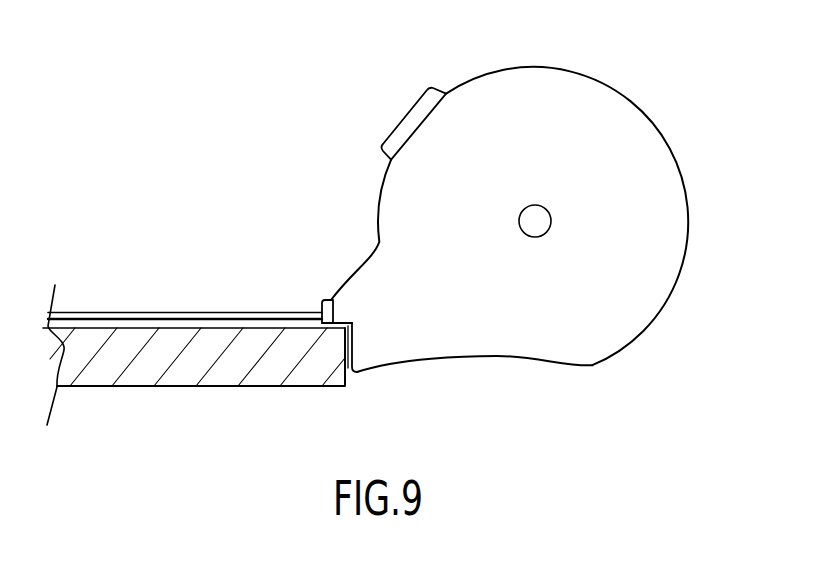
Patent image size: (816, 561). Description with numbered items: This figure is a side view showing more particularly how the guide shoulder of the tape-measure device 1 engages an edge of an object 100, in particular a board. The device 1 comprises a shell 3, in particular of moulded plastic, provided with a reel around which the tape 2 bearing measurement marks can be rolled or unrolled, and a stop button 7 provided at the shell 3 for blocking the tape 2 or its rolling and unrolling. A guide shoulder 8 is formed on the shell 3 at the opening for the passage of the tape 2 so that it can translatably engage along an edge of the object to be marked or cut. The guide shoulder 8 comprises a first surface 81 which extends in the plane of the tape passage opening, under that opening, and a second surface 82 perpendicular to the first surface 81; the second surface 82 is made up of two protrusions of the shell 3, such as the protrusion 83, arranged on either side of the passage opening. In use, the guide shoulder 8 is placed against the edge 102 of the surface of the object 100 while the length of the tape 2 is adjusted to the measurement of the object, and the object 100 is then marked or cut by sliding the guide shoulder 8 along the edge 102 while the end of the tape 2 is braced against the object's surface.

The tape-measure device 1 is at (650, 98).
The tape 2 is at (170, 317).
The shell 3 is at (630, 282).
The stop button 7 is at (415, 122).
The guide shoulder 8 is at (352, 357).
The first surface 81 is at (353, 337).
The second surface 82 is at (337, 312).
The protrusion 83 is at (338, 314).
The object 100 is at (140, 363).
The edge 102 is at (333, 340).